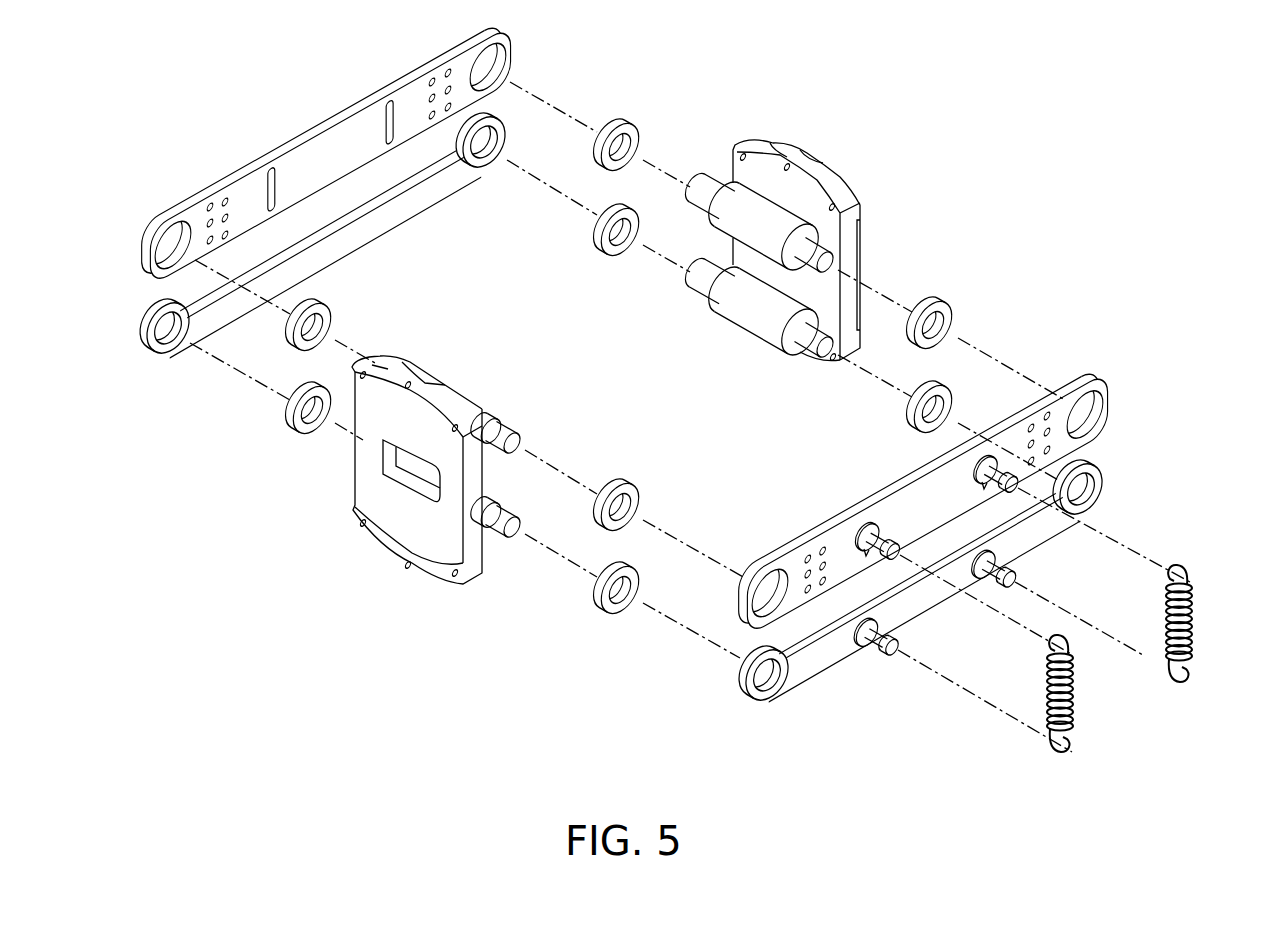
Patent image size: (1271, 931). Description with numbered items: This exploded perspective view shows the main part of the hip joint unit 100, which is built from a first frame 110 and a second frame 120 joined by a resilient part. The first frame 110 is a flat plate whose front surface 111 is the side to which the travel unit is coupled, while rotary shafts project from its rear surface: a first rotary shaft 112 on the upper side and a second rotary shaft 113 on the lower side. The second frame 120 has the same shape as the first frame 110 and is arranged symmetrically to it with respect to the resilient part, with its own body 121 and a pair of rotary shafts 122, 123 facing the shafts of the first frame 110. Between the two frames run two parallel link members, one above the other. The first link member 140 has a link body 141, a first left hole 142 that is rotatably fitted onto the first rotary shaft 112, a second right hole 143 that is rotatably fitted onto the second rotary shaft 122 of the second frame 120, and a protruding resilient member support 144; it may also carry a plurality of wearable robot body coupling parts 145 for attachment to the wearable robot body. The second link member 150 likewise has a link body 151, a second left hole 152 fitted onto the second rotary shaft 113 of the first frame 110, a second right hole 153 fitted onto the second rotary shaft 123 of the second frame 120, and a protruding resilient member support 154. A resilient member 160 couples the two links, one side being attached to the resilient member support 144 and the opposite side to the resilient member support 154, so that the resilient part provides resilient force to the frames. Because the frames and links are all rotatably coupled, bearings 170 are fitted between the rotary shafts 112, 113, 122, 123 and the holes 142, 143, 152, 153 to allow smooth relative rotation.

The hip joint unit 100 is at (925, 121).
The first frame 110 is at (625, 357).
The front surface 111 is at (458, 393).
The first rotary shaft 112 is at (500, 430).
The second rotary shaft 113 is at (503, 512).
The second frame 120 is at (945, 183).
The second bracket body 121 is at (855, 229).
The second rotary shaft 122 is at (823, 252).
The second rotary shaft 123 is at (823, 345).
The first link member 140 is at (1113, 393).
The link body 141 is at (920, 500).
The first left hole 142 is at (758, 600).
The second right hole 143 is at (1092, 404).
The resilient member support 144 is at (990, 462).
The wearable robot body coupling parts 145 is at (1037, 418).
The second link member 150 is at (1113, 477).
The link body 151 is at (930, 600).
The second left hole 152 is at (775, 690).
The second right hole 153 is at (1093, 480).
The resilient member support 154 is at (993, 583).
The resilient member 160 is at (1165, 655).
The bearings 170 is at (910, 345).